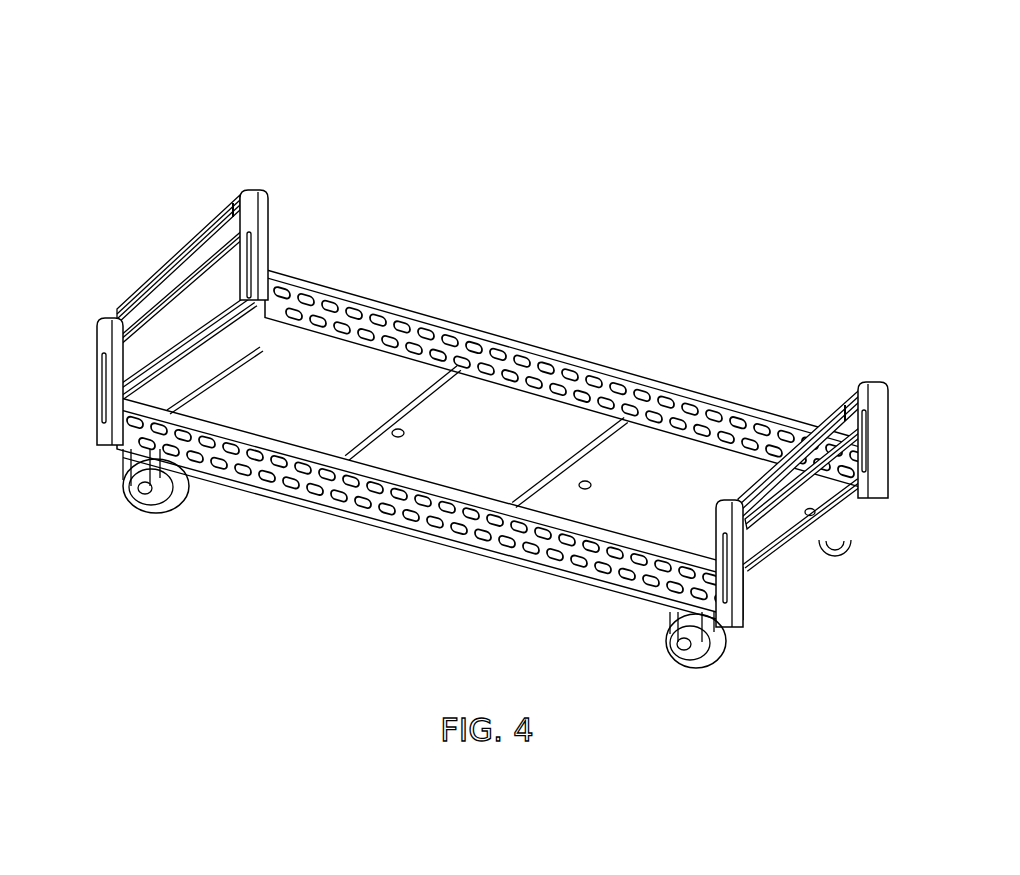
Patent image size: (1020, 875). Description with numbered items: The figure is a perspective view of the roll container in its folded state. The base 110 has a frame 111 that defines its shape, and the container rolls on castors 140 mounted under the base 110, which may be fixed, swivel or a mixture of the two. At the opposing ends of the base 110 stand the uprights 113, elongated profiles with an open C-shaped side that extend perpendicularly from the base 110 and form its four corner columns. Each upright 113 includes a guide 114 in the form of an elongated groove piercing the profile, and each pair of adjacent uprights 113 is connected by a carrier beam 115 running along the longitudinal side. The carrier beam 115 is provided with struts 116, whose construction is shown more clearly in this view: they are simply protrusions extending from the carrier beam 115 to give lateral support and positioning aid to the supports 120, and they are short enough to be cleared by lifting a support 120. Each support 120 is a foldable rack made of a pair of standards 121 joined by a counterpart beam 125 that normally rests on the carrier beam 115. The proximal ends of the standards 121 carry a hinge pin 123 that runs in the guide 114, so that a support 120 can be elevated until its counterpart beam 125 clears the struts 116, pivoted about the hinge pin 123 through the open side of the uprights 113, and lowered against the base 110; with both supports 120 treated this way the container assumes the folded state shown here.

The base 110 is at (354, 533).
The frame 111 is at (423, 532).
The uprights 113 is at (103, 433).
The guide 114 is at (103, 355).
The carrier beam 115 is at (176, 270).
The struts 116 is at (232, 214).
The supports 120 is at (495, 281).
The standards 121 is at (424, 320).
The hinge pin 123 is at (103, 420).
The counterpart beam 125 is at (254, 350).
The castors 140 is at (143, 507).